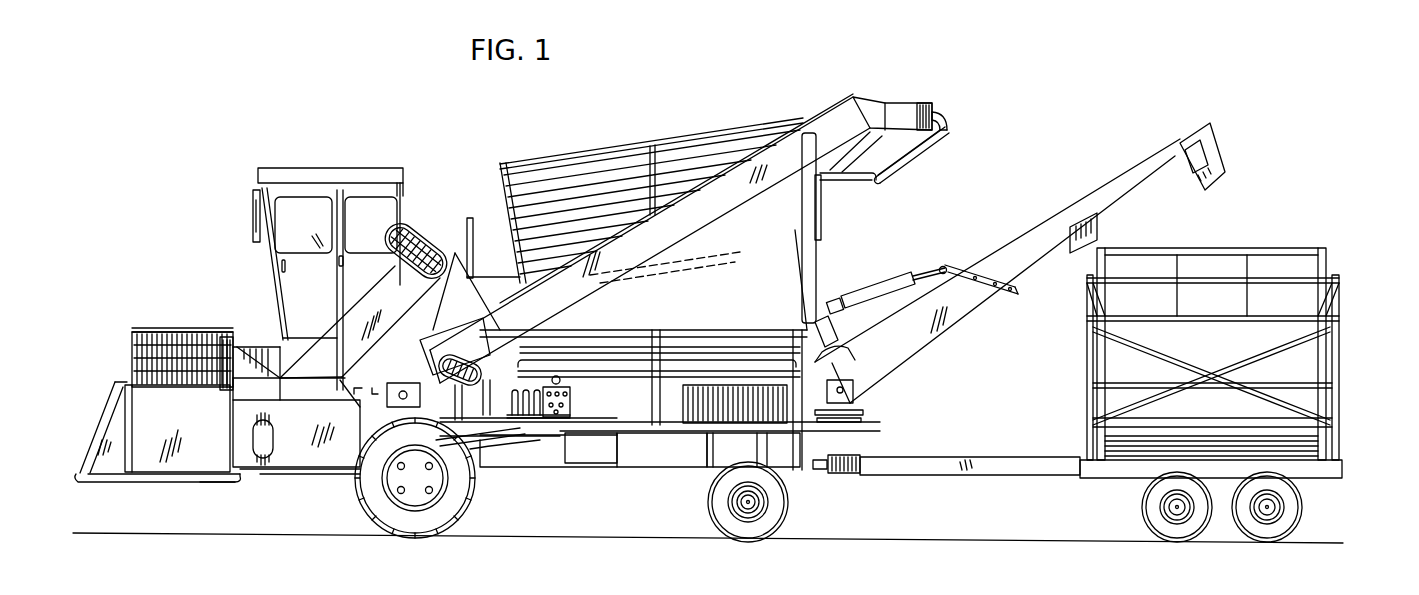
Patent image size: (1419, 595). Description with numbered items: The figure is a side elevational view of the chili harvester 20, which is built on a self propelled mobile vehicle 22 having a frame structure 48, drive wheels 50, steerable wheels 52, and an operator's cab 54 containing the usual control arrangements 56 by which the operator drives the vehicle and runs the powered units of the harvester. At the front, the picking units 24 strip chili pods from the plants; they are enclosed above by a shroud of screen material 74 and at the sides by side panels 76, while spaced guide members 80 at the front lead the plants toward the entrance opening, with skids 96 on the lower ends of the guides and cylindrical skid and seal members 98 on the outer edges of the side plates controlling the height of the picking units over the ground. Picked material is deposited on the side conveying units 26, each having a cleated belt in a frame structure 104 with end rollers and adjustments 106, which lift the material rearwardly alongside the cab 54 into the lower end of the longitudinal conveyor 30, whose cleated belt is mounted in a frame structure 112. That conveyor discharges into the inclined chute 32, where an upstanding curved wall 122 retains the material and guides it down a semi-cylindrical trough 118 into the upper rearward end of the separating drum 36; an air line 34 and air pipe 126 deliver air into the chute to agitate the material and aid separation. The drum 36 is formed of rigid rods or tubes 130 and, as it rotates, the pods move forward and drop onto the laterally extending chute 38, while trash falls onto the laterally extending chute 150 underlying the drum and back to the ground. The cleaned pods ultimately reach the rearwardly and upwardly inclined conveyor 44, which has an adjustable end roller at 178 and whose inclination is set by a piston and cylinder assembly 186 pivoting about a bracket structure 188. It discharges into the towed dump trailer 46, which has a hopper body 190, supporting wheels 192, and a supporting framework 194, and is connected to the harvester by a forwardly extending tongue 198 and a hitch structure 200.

The chili harvester 20 is at (245, 187).
The self propelled mobile vehicle 22 is at (635, 458).
The picking units 24 is at (190, 332).
The conveying units 26 is at (325, 328).
The longitudinal conveyor 30 is at (808, 118).
The inclined chute 32 is at (919, 102).
The air line 34 is at (955, 123).
The separating drum 36 is at (617, 162).
The chute 38 is at (490, 277).
The inclined conveyor 44 is at (1045, 218).
The dump trailer 46 is at (1245, 243).
The frame structure 48 is at (700, 445).
The drive wheels 50 is at (460, 507).
The steerable wheels 52 is at (763, 527).
The operator's cab 54 is at (353, 167).
The control arrangements 56 is at (310, 243).
The screen material 74 is at (147, 325).
The side panels 76 is at (192, 463).
The guide members 80 is at (108, 410).
The skids 96 is at (105, 483).
The cylindrical skid and seal members 98 is at (215, 487).
The frame structure 104 is at (410, 303).
The end roller adjustments 106 is at (412, 227).
The frame structure 112 is at (728, 183).
The trough 118 is at (840, 163).
The upstanding curved wall 122 is at (892, 105).
The air pipe 126 is at (907, 163).
The rods or tubes 130 is at (673, 163).
The laterally extending chute 150 is at (733, 306).
The adjustable end roller adjustment 178 is at (1180, 145).
The piston and cylinder assembly 186 is at (883, 280).
The bracket structure 188 is at (853, 402).
The hopper body 190 is at (1303, 375).
The supporting wheels 192 is at (1273, 535).
The supporting framework 194 is at (1337, 362).
The tongue 198 is at (960, 460).
The hitch structure 200 is at (818, 472).